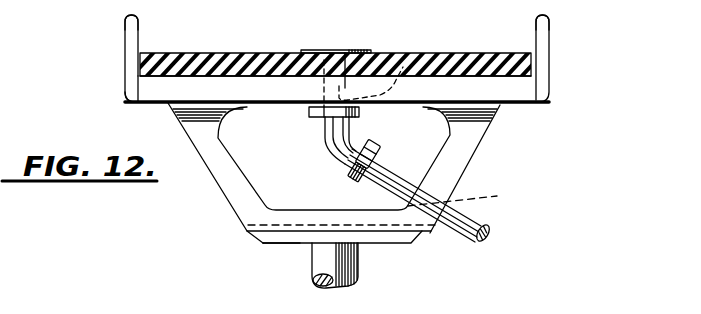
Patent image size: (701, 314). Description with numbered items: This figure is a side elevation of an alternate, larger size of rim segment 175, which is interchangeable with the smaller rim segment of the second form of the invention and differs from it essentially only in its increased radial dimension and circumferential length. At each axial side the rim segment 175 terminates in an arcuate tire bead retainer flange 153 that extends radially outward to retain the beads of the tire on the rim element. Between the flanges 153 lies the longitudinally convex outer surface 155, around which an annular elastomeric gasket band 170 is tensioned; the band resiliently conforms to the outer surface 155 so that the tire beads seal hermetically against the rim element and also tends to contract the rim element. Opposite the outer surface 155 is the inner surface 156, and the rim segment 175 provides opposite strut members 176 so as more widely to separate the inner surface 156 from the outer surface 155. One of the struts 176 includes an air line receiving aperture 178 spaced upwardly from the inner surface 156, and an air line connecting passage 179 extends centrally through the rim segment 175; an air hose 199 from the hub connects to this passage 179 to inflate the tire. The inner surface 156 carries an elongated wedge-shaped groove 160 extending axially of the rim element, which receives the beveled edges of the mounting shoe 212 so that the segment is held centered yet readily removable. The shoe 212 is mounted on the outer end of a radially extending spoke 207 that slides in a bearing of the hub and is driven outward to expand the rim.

The tire bead retainer flange 153 is at (132, 25).
The outer surface 155 is at (214, 57).
The inner surface 156 is at (153, 103).
The groove 160 is at (247, 237).
The gasket band 170 is at (279, 67).
The rim segment 175 is at (552, 70).
The strut member 176 is at (218, 169).
The air line receiving aperture 178 is at (440, 196).
The air line connecting passage 179 is at (403, 66).
The air hose 199 is at (390, 172).
The spoke 207 is at (357, 266).
The shoe 212 is at (283, 243).